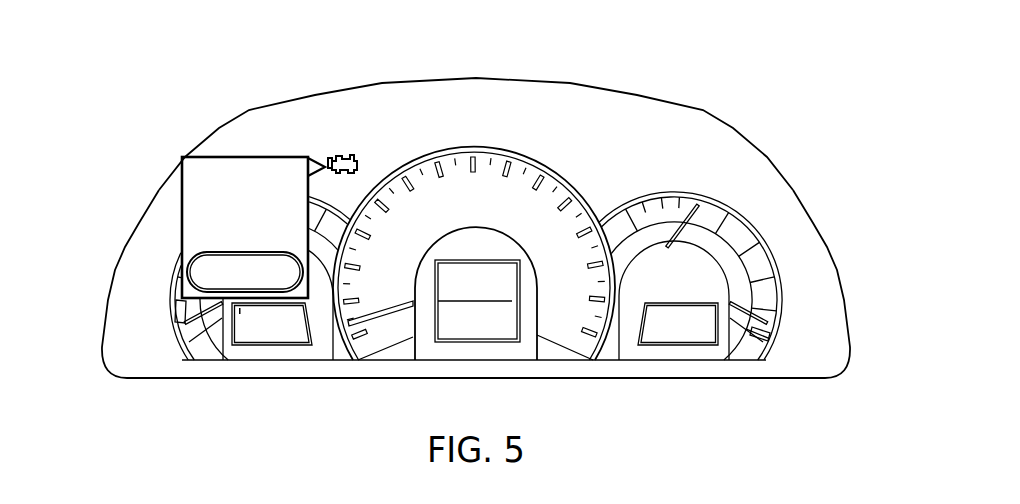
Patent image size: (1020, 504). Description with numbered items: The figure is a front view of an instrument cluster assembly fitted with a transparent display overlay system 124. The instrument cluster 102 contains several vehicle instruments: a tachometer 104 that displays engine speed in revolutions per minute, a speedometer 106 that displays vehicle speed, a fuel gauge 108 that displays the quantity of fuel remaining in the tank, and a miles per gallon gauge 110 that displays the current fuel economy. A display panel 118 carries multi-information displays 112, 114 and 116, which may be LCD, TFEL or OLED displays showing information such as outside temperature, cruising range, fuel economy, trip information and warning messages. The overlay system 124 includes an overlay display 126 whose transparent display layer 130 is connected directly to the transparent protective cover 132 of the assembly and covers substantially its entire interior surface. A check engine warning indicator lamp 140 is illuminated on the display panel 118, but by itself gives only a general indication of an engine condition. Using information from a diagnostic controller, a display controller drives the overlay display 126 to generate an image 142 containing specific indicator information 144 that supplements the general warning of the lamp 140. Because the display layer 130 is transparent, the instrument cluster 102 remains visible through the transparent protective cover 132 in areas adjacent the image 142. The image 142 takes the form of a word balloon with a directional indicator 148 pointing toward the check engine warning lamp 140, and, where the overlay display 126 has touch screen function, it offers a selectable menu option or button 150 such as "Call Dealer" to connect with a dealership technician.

The instrument cluster 102 is at (493, 128).
The tachometer 104 is at (163, 308).
The speedometer 106 is at (598, 142).
The fuel gauge 108 is at (696, 168).
The miles per gallon gauge 110 is at (785, 258).
The multi-information display 112 is at (267, 346).
The multi-information display 114 is at (447, 345).
The multi-information display 116 is at (667, 345).
The display panel 118 is at (378, 108).
The transparent display overlay system 124 is at (798, 103).
The overlay display 126 is at (243, 137).
The transparent display layer 130 is at (303, 115).
The transparent protective cover 132 is at (545, 112).
The check engine warning indicator lamp 140 is at (358, 163).
The image 142 is at (170, 177).
The specific indicator information 144 is at (170, 207).
The directional indicator 148 is at (324, 158).
The selectable menu option or button 150 is at (198, 256).